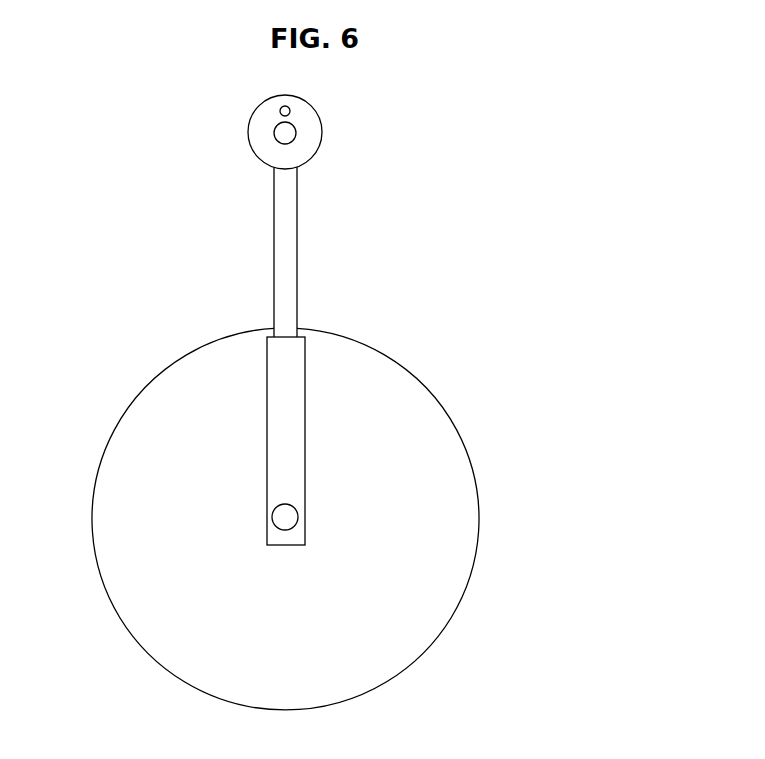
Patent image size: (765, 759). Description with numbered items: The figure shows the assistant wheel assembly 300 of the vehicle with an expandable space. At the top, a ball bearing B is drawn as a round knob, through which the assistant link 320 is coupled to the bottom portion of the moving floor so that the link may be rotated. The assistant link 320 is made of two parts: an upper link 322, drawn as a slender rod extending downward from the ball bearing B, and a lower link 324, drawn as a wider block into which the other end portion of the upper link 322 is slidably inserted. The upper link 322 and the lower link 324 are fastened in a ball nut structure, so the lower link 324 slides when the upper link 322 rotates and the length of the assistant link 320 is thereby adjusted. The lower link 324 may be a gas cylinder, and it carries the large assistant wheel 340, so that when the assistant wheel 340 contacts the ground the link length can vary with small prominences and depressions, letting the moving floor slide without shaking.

The assistant wheel assembly 300 is at (134, 337).
The assistant link 320 is at (460, 177).
The upper link 322 is at (290, 242).
The lower link 324 is at (293, 390).
The assistant wheel 340 is at (450, 518).
The ball bearings B is at (228, 129).